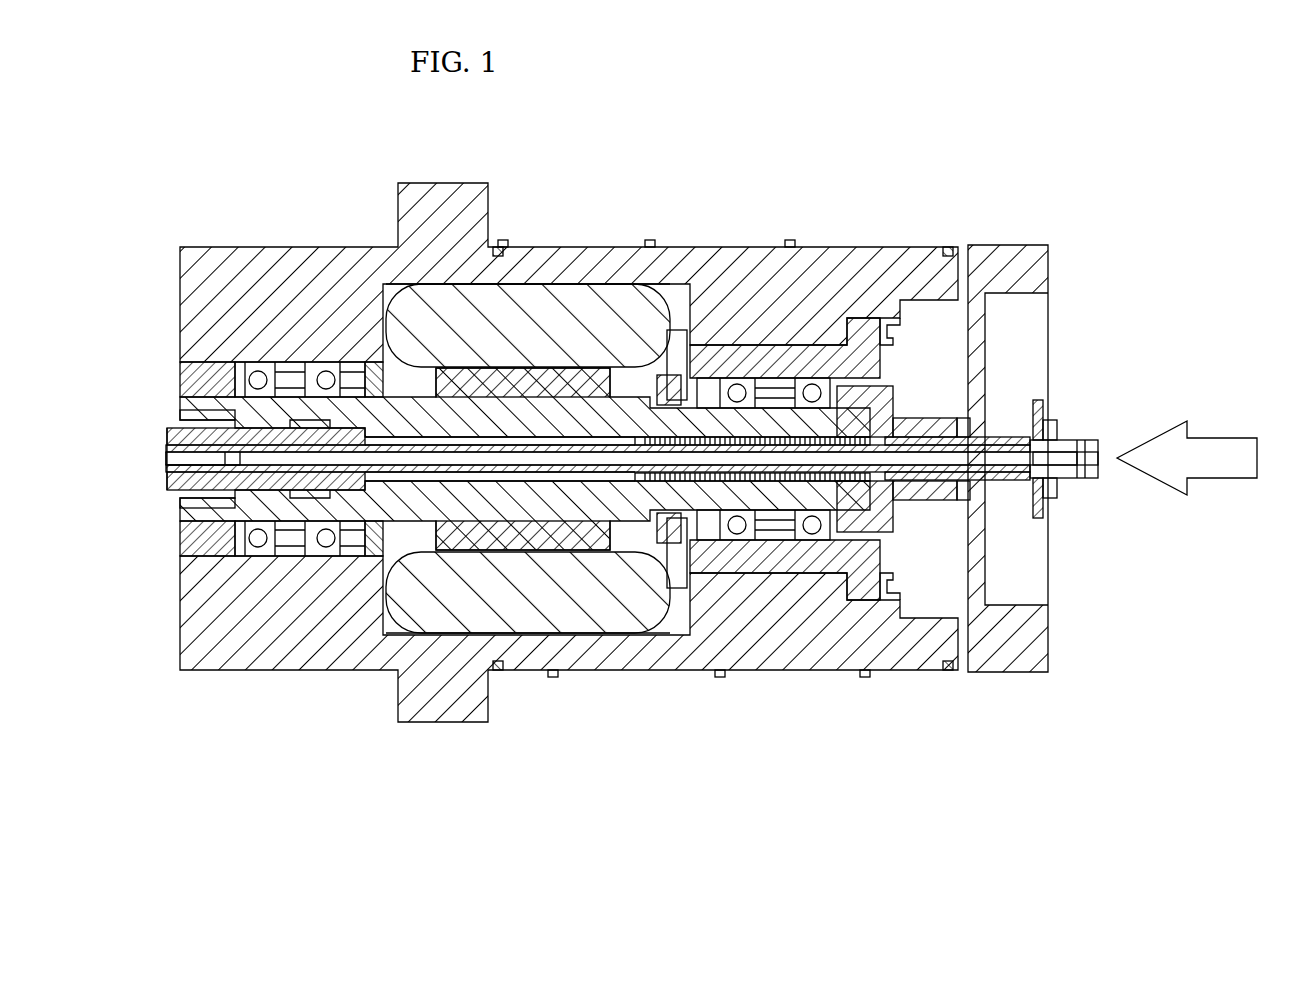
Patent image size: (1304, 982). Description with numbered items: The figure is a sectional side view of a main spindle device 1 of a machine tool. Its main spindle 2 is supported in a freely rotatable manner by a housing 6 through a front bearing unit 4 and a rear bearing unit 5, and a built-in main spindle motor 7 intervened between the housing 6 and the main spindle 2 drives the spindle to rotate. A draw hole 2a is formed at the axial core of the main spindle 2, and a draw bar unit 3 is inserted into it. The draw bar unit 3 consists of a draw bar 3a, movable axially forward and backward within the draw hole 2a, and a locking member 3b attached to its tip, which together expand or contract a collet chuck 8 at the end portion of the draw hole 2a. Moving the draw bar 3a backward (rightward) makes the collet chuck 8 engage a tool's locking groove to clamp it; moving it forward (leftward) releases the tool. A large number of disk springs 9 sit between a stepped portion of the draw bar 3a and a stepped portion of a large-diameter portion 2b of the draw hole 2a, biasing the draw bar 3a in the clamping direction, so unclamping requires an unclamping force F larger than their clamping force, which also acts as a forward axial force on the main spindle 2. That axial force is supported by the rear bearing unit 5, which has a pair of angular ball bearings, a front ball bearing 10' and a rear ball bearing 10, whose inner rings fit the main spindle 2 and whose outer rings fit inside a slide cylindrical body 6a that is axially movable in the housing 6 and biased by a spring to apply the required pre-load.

The main spindle device 1 is at (645, 202).
The main spindle 2 is at (168, 410).
The draw hole 2a is at (457, 437).
The large-diameter portion 2b is at (656, 400).
The draw bar unit 3 is at (160, 460).
The draw bar 3a is at (510, 437).
The locking member 3b is at (166, 472).
The front bearing unit 4 is at (290, 362).
The rear bearing unit 5 is at (777, 378).
The housing 6 is at (868, 247).
The slide cylindrical body 6a is at (893, 330).
The main spindle motor 7 is at (545, 325).
The collet chuck 8 is at (216, 428).
The disk springs 9 is at (745, 376).
The rear ball bearing 10 is at (927, 425).
The front ball bearing 10' is at (752, 342).